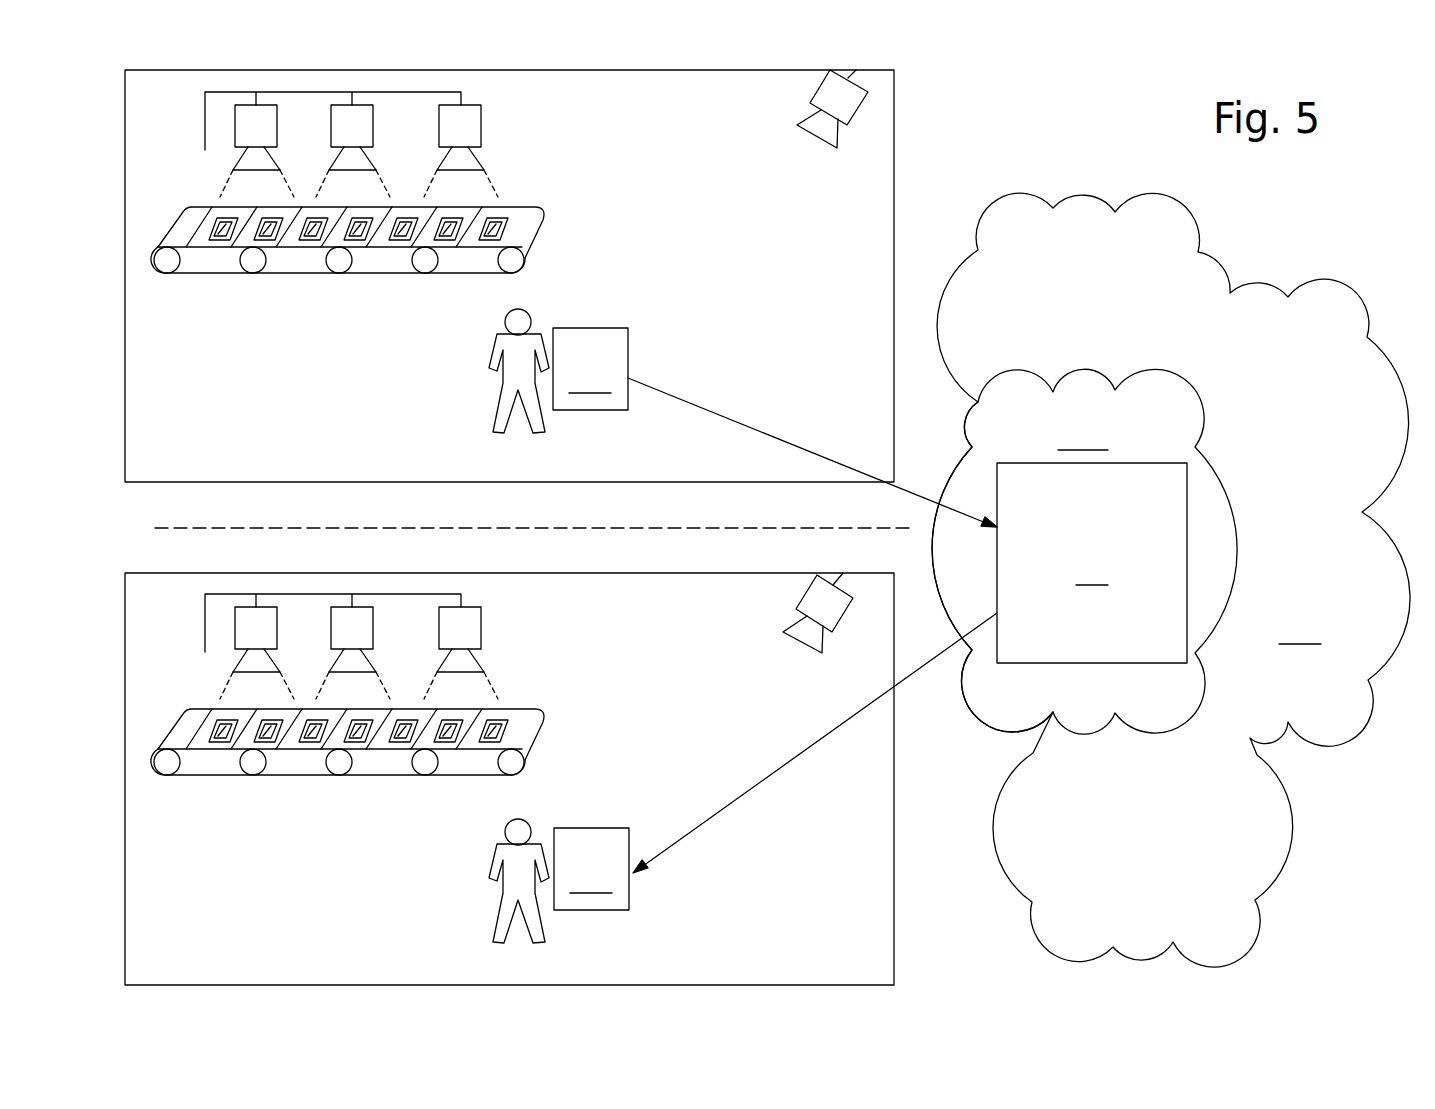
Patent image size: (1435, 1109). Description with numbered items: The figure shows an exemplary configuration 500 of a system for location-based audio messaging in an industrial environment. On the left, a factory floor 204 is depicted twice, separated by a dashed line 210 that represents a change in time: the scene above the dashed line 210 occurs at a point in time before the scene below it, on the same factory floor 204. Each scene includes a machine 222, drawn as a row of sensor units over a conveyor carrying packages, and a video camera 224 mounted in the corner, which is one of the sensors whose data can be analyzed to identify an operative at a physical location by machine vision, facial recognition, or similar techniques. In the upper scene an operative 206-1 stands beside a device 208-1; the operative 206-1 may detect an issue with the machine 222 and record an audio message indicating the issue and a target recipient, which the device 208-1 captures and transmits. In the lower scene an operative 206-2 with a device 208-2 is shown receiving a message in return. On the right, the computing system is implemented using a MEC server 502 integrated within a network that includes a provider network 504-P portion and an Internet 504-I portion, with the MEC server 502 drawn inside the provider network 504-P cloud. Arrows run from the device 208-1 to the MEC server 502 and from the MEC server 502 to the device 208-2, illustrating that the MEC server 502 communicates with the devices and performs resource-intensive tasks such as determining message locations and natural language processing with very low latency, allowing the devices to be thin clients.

The factory floor 204 is at (895, 238).
The machine 222 is at (482, 136).
The video camera 224 is at (862, 98).
The operative 206-1 is at (502, 378).
The operative 206-2 is at (503, 882).
The device 208-1 is at (590, 369).
The device 208-2 is at (591, 869).
The dashed line 210 is at (787, 528).
The configuration 500 is at (1057, 150).
The MEC server 502 is at (1092, 563).
The provider network 504-P is at (1084, 551).
The Internet 504-I is at (1171, 580).